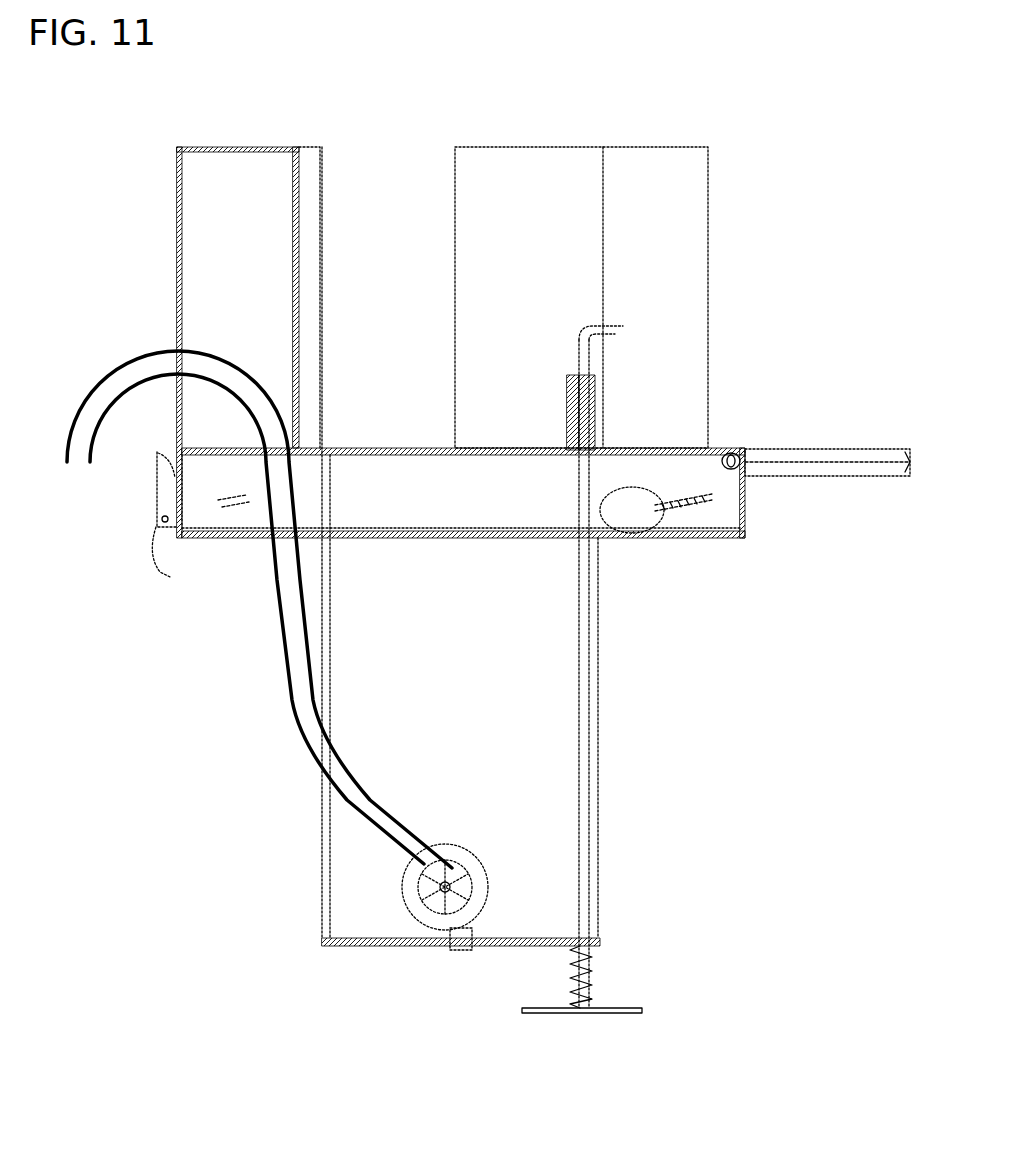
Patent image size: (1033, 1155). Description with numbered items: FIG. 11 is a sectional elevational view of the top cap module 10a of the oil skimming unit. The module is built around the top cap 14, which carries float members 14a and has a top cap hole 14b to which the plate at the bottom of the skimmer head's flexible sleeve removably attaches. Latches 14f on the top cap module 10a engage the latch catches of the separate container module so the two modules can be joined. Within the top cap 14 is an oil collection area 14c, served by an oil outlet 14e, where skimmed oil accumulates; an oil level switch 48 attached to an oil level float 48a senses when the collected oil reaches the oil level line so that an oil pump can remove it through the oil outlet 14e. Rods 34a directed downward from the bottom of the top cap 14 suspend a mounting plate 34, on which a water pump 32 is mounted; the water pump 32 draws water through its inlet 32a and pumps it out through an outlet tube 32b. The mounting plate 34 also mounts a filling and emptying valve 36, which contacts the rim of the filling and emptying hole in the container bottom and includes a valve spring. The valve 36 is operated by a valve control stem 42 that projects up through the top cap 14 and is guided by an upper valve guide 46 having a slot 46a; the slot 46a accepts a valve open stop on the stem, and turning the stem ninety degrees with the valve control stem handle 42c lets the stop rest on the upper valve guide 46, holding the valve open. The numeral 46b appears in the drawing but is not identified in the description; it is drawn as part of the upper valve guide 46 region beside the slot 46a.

The top cap module 10a is at (383, 75).
The top cap 14 is at (331, 447).
The float members 14a is at (177, 207).
The top cap hole 14b is at (430, 456).
The oil collection area 14c is at (233, 489).
The oil outlet 14e is at (853, 449).
The latches 14f is at (160, 502).
The water pump 32 is at (430, 910).
The inlet 32a is at (462, 950).
The outlet tube 32b is at (100, 390).
The mounting plate 34 is at (418, 923).
The rods 34a is at (320, 862).
The filling and emptying valve 36 is at (600, 1014).
The valve control stem 42 is at (575, 675).
The valve control stem handle 42c is at (623, 327).
The upper valve guide 46 is at (595, 402).
The slot 46a is at (567, 385).
The guide block second portion 46b is at (567, 437).
The oil level switch 48 is at (747, 523).
The oil level float 48a is at (650, 533).